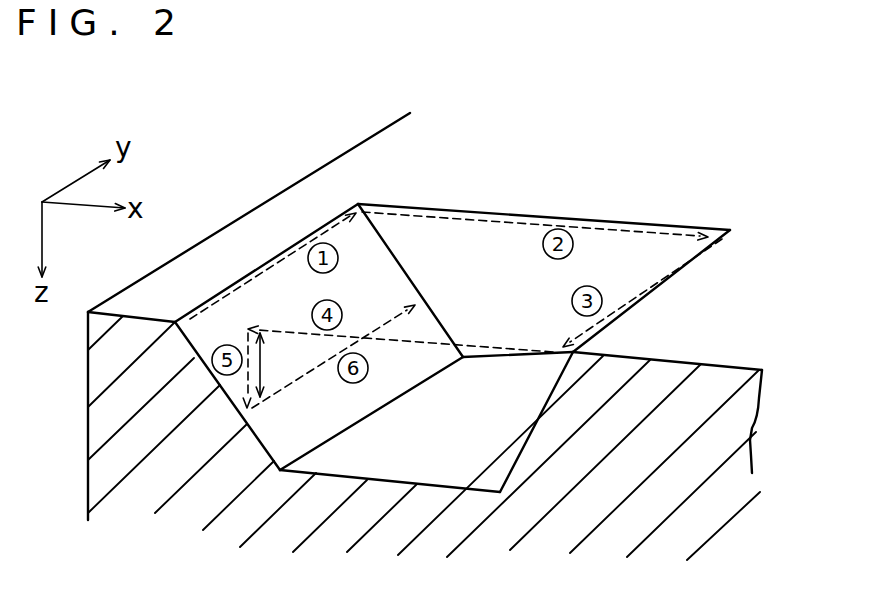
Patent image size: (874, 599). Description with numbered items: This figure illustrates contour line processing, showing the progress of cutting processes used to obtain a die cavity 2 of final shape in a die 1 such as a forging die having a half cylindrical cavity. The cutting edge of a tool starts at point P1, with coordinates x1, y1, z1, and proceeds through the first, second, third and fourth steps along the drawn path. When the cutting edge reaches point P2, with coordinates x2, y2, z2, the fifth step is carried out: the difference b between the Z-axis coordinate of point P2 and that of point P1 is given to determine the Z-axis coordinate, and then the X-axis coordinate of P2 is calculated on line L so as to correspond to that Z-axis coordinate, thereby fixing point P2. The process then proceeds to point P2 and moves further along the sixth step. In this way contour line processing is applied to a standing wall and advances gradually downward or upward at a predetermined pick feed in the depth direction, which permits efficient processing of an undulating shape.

The die 1 is at (335, 143).
The die cavity 2 is at (650, 250).
The difference b is at (271, 365).
The point P1 is at (186, 326).
The point P2 is at (253, 410).
The line L is at (212, 385).